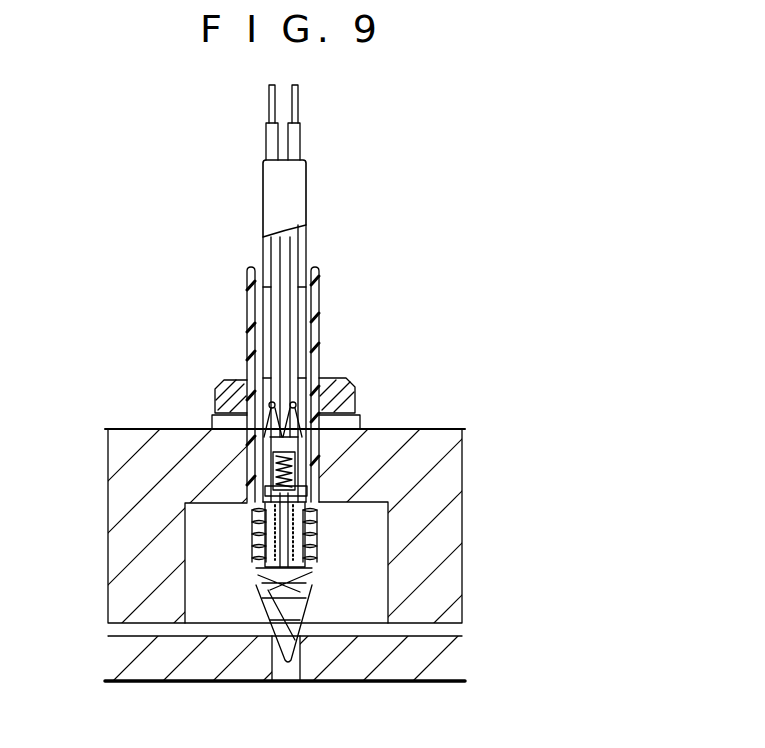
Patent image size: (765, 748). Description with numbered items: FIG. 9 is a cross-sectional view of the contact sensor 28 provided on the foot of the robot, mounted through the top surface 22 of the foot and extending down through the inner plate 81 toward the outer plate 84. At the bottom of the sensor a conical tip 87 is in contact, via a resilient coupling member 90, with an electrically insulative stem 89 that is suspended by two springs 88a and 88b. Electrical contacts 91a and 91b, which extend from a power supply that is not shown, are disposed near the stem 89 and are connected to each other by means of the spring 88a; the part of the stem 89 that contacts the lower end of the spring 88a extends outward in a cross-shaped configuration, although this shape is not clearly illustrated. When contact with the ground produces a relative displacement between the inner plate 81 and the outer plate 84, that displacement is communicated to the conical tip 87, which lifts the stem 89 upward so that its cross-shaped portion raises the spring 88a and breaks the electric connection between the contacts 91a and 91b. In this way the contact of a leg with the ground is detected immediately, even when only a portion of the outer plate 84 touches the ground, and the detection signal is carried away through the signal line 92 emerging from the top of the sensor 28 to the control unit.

The top surface of base plate 22 is at (113, 428).
The contact sensor 28 is at (338, 320).
The inner plate 81 is at (442, 553).
The outer plate 84 is at (426, 666).
The conical tip 87 is at (258, 602).
The spring 88a is at (294, 464).
The spring 88b is at (312, 552).
The electrically insulative stem 89 is at (253, 534).
The resilient coupling member 90 is at (307, 590).
The electrical contact 91a is at (240, 378).
The electrical contact 91b is at (342, 373).
The signal line 92 is at (297, 194).